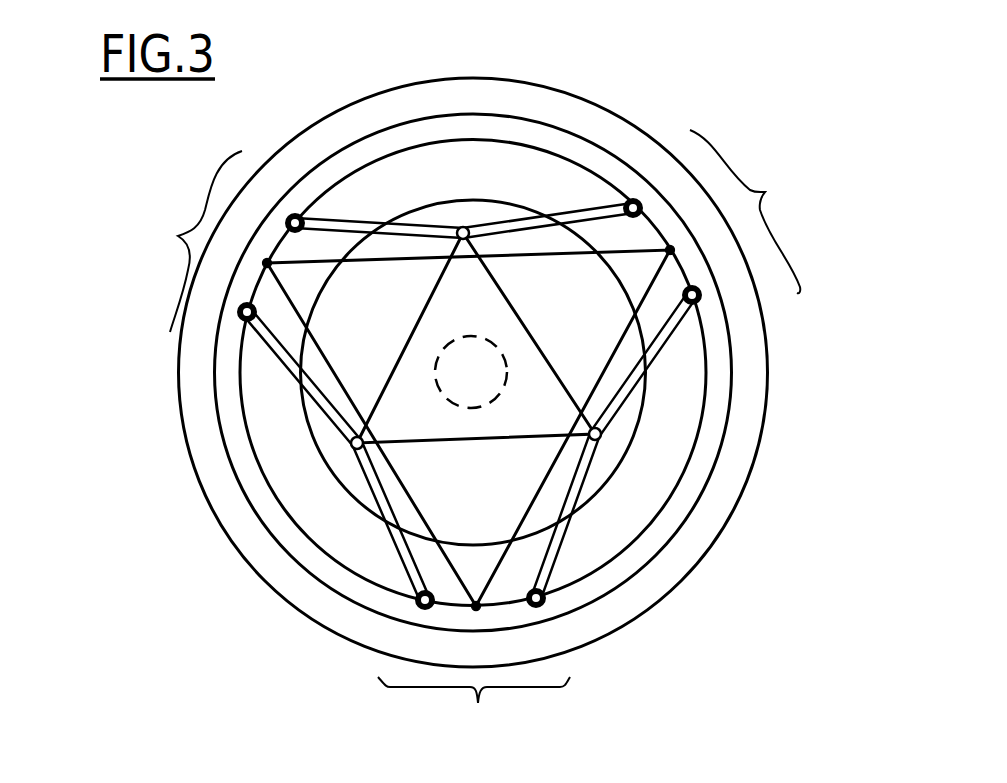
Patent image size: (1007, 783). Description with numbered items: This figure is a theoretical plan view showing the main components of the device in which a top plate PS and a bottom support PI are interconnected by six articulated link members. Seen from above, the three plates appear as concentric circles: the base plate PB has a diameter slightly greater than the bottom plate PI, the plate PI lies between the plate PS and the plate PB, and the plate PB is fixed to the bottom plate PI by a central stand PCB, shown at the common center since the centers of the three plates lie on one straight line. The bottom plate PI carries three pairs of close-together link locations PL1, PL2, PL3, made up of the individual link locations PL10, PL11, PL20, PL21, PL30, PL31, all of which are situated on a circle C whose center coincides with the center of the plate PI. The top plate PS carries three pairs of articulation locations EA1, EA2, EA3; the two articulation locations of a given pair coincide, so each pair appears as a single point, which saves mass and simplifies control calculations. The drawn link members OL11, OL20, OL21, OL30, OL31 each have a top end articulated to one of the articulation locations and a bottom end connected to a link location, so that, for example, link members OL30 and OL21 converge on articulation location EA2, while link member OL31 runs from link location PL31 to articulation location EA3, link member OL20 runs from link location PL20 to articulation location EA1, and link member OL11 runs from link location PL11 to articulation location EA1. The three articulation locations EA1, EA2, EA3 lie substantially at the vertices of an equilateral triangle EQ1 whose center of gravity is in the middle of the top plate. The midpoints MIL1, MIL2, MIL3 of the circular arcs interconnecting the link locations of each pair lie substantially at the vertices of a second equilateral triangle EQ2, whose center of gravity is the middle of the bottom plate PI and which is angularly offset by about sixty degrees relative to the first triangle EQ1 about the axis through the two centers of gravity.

The base plate PB is at (572, 93).
The bottom support PI is at (603, 145).
The circle C is at (692, 460).
The top plate PS is at (467, 198).
The central stand PCB is at (467, 405).
The equilateral triangle EQ1 is at (550, 362).
The second equilateral triangle EQ2 is at (528, 505).
The midpoint of circular arc MIL1 is at (477, 607).
The midpoint of circular arc MIL2 is at (670, 249).
The midpoint of circular arc MIL3 is at (267, 258).
The link member OL30 is at (362, 221).
The link member OL21 is at (532, 223).
The link member OL31 is at (287, 362).
The link member OL20 is at (663, 340).
The link member OL11 is at (558, 533).
The articulation location EA1 is at (601, 439).
The articulation location EA2 is at (471, 238).
The articulation location EA3 is at (350, 453).
The link location PL30 is at (297, 213).
The link location PL31 is at (243, 315).
The link location PL21 is at (636, 205).
The link location PL20 is at (695, 305).
The link location PL11 is at (539, 604).
The link location PL10 is at (423, 604).
The pair of close-together link locations PL1 is at (483, 708).
The pair of close-together link locations PL2 is at (774, 187).
The pair of close-together link locations PL3 is at (175, 239).